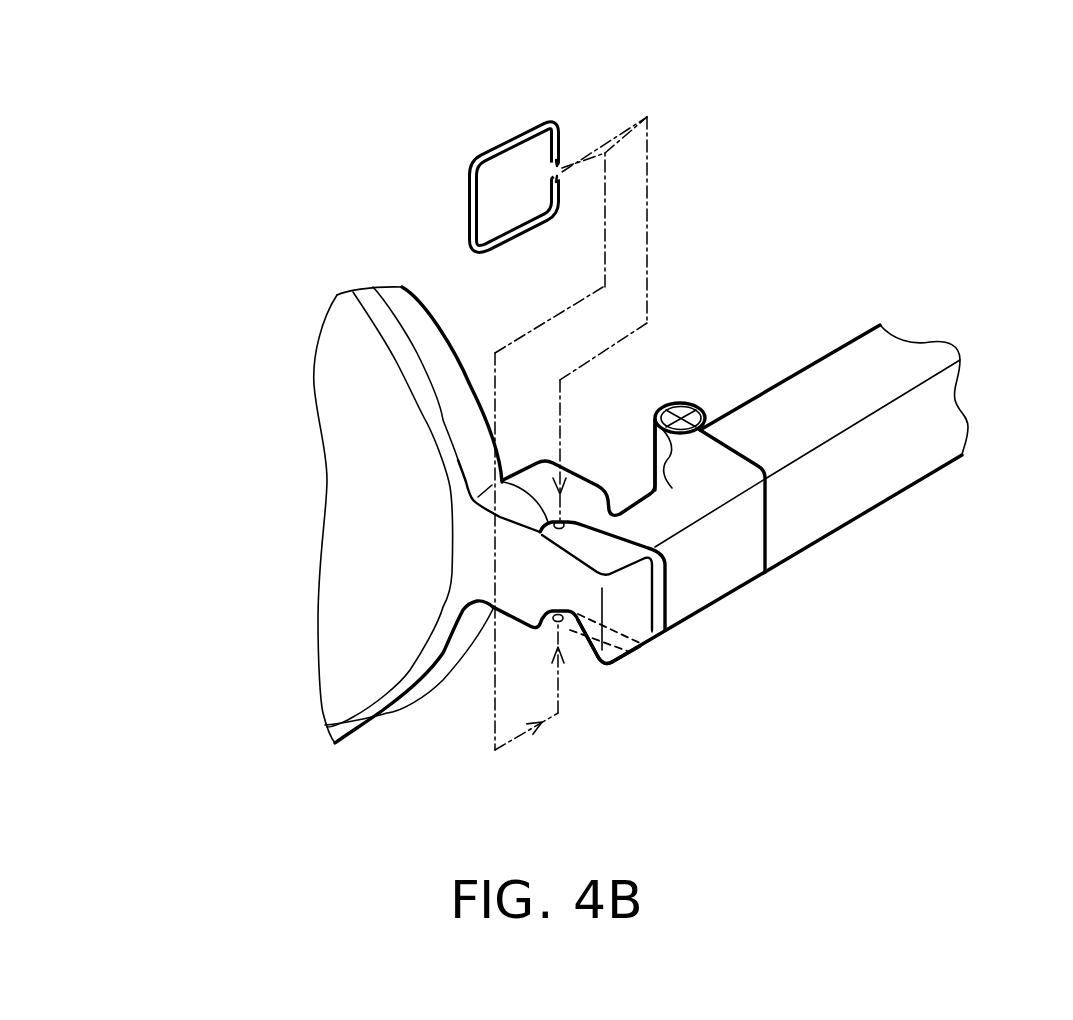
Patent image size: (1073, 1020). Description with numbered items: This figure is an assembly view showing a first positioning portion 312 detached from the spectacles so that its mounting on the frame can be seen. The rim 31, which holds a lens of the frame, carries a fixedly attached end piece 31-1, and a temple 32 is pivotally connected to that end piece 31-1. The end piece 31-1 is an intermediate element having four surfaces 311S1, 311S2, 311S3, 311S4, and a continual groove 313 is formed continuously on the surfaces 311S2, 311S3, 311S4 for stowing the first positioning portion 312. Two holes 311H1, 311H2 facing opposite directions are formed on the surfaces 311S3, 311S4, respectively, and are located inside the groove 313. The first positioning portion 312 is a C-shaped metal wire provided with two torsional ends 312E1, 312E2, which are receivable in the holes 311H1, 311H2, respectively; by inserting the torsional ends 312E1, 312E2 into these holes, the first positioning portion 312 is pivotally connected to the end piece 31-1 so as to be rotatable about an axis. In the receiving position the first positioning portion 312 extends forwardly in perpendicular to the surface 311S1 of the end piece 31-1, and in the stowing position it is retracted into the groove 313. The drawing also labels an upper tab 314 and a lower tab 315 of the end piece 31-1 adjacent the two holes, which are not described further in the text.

The rim 31 is at (446, 336).
The end piece 31-1 is at (627, 662).
The first positioning portion 312 is at (490, 153).
The torsional end 312E1 is at (565, 138).
The torsional end 312E2 is at (560, 203).
The groove 313 is at (665, 627).
The upper tab 314 is at (503, 481).
The lower tab 315 is at (538, 630).
The hole 311H1 is at (562, 519).
The hole 311H2 is at (561, 624).
The surface 311S1 is at (483, 571).
The surface 311S2 is at (717, 573).
The surface 311S3 is at (720, 477).
The surface 311S4 is at (715, 603).
The temple 32 is at (912, 343).